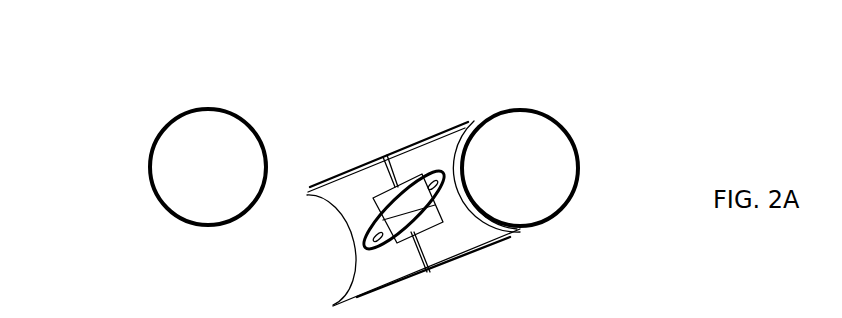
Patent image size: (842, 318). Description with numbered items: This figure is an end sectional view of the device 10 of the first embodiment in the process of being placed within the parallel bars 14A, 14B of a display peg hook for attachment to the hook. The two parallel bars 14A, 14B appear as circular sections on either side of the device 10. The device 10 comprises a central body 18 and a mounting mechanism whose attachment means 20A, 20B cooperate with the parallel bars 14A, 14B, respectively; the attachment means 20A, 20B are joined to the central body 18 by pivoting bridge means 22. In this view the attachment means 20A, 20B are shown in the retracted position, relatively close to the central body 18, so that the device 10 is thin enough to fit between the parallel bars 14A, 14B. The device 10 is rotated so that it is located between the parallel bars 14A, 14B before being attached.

The device 10 is at (328, 172).
The parallel bar 14A is at (190, 130).
The parallel bar 14B is at (542, 147).
The central body 18 is at (457, 268).
The attachment means 20A is at (308, 195).
The attachment means 20B is at (468, 123).
The pivoting bridge means 22 is at (398, 183).